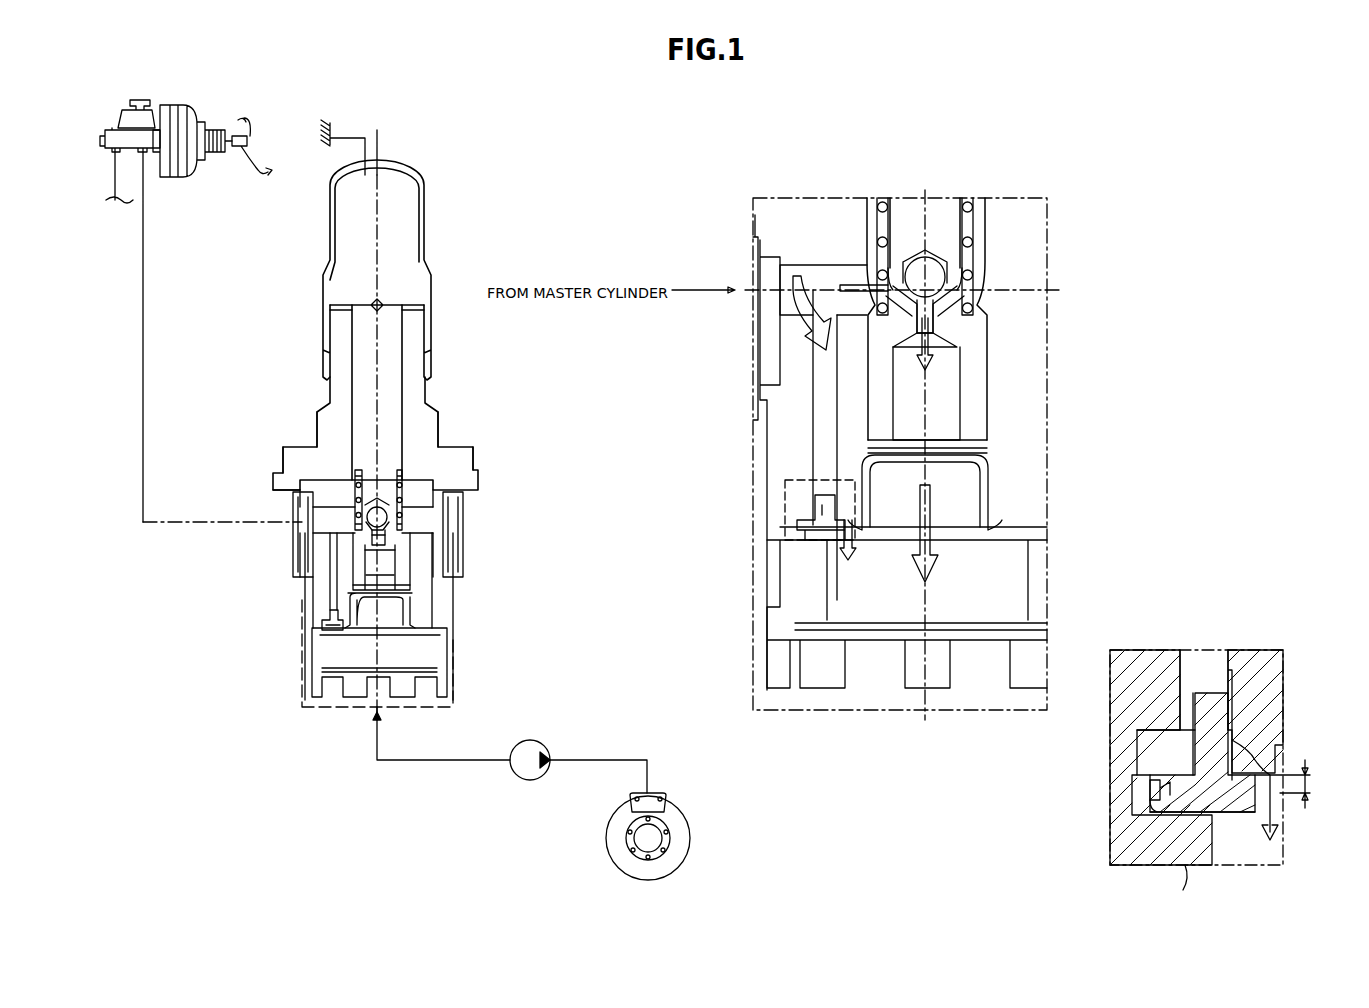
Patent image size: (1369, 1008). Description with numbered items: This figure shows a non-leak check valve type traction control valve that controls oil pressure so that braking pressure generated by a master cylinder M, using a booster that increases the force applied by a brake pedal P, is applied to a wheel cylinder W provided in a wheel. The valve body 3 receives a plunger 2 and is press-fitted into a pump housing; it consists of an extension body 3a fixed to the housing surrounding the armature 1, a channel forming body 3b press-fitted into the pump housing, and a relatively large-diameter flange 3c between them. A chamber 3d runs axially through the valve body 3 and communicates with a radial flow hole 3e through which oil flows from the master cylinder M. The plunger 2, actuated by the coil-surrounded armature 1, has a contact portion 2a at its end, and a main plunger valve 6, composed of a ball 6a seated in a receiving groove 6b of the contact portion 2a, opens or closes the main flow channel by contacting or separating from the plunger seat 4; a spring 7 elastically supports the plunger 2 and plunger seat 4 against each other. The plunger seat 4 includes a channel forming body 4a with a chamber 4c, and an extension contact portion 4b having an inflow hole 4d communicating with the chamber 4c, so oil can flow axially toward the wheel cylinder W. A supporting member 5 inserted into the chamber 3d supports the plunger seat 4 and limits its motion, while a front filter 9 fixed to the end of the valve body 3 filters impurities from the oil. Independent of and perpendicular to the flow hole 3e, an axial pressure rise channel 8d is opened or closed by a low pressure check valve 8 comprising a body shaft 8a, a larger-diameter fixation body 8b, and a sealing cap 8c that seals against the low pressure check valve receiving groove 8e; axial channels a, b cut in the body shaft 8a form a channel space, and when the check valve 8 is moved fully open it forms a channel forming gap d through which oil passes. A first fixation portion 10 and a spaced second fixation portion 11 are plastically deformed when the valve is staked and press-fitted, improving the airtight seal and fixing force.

The armature 1 is at (400, 211).
The plunger 2 is at (395, 326).
The contact portion 2a is at (940, 210).
The valve body 3 is at (525, 388).
The extension body 3a is at (438, 432).
The channel forming body 3b is at (455, 540).
The flange 3c is at (463, 455).
The chamber 3d is at (410, 503).
The flow hole 3e is at (335, 520).
The plunger seat 4 is at (530, 558).
The channel forming body 4a is at (398, 560).
The extension contact portion 4b is at (410, 595).
The chamber 4c is at (388, 540).
The inflow hole 4d is at (398, 588).
The supporting member 5 is at (380, 610).
The main plunger valve 6 is at (621, 312).
The ball 6a is at (916, 282).
The receiving groove 6b is at (922, 262).
The spring 7 is at (405, 480).
The low pressure check valve 8 is at (788, 568).
The body shaft 8a is at (1195, 755).
The fixation body 8b is at (1160, 790).
The sealing cap 8c is at (1152, 812).
The pressure rise channel 8d is at (815, 453).
The low pressure check valve receiving groove 8e is at (810, 520).
The front filter 9 is at (440, 685).
The first fixation portion 10 is at (283, 482).
The second fixation portion 11 is at (295, 595).
The master cylinder M is at (120, 112).
The brake pedal P is at (252, 172).
The wheel cylinder W is at (655, 793).
The axial channel a is at (1190, 744).
The axial channel b is at (1235, 715).
The channel forming gap d is at (1299, 789).